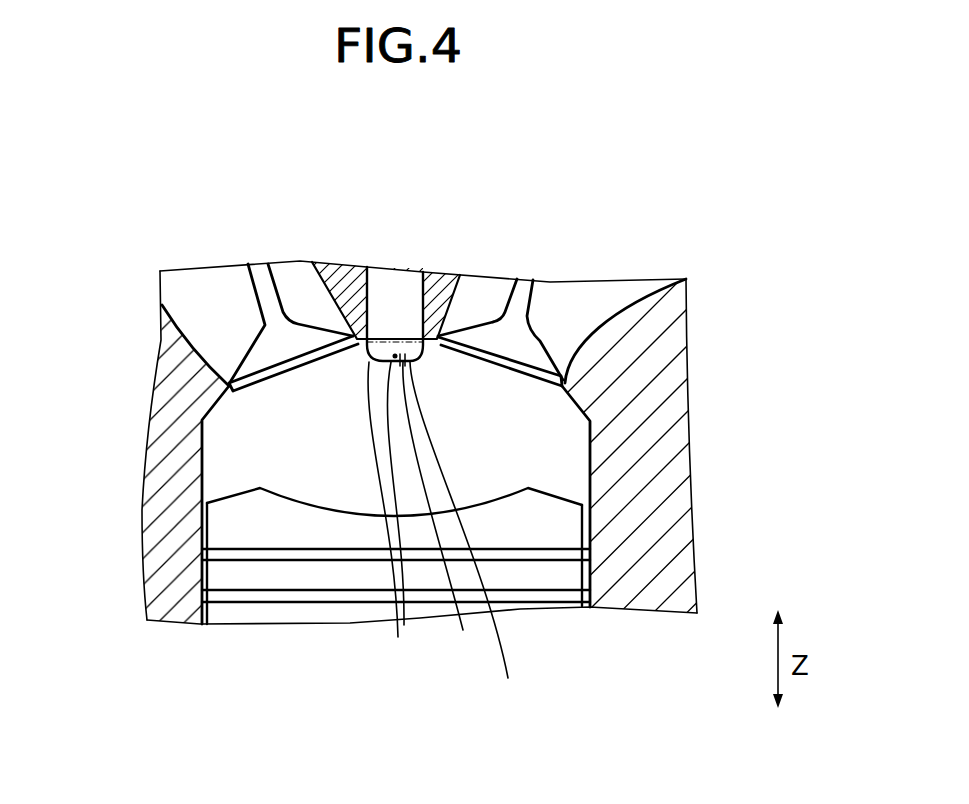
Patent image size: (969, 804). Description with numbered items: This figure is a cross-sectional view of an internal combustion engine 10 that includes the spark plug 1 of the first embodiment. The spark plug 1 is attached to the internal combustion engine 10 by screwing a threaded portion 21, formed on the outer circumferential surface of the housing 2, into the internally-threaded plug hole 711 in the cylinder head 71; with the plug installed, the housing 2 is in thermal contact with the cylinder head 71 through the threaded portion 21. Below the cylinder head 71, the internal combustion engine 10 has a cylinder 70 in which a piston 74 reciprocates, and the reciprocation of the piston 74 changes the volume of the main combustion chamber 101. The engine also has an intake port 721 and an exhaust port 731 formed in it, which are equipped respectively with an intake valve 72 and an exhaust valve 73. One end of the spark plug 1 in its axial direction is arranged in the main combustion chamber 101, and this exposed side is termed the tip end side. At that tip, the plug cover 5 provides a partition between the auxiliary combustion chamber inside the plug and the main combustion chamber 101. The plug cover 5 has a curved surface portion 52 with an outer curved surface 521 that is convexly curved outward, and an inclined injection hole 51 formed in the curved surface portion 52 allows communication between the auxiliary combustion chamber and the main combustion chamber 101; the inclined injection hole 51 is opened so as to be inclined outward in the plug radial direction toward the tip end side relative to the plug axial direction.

The internal combustion engine 10 is at (582, 178).
The spark plug 1 is at (384, 288).
The housing 2 is at (402, 283).
The threaded portion 21 is at (428, 318).
The plug cover 5 is at (378, 348).
The cylinder 70 is at (586, 527).
The cylinder head 71 is at (342, 275).
The plug hole 711 is at (428, 305).
The intake valve 72 is at (277, 345).
The intake port 721 is at (218, 290).
The exhaust valve 73 is at (530, 350).
The exhaust port 731 is at (545, 311).
The piston 74 is at (281, 576).
The main combustion chamber 101 is at (272, 463).
The inclined injection hole 51 is at (391, 517).
The curved surface portion 52 is at (440, 514).
The outer curved surface 521 is at (473, 535).